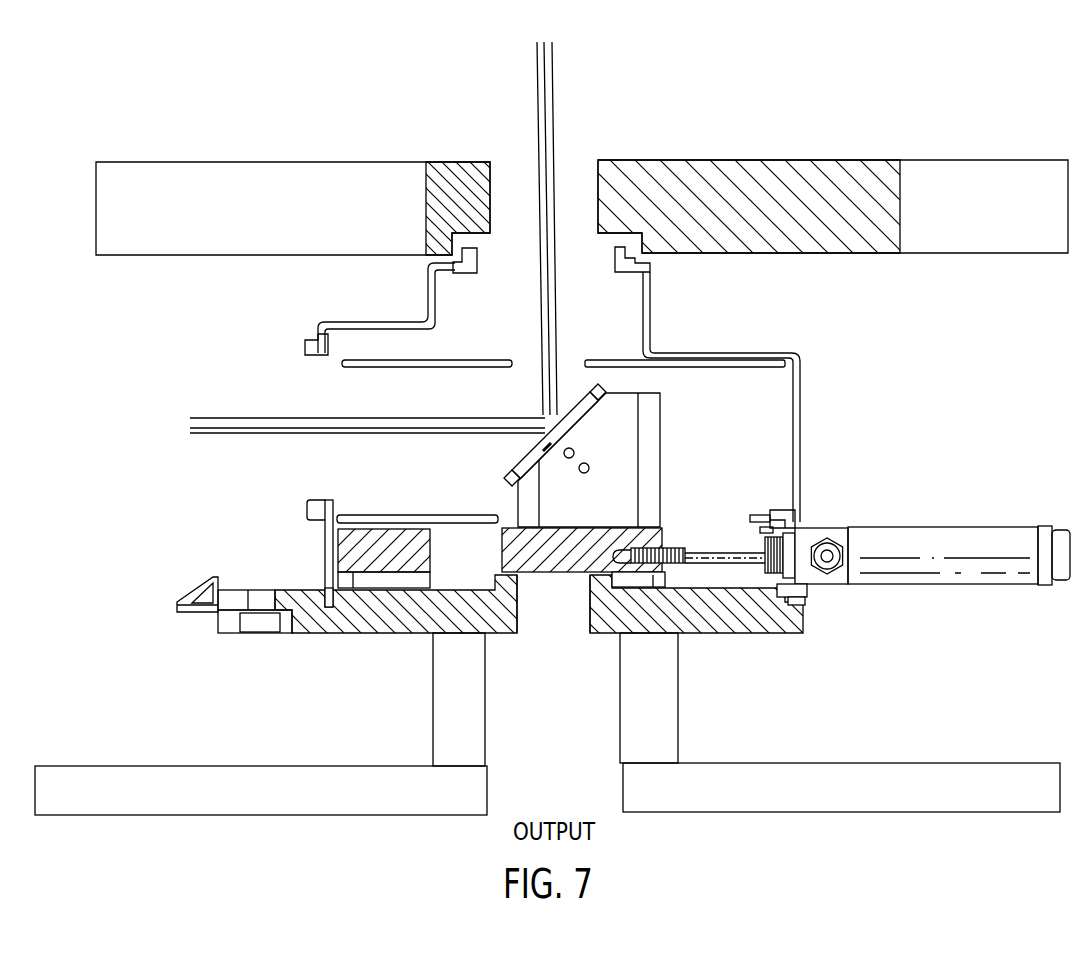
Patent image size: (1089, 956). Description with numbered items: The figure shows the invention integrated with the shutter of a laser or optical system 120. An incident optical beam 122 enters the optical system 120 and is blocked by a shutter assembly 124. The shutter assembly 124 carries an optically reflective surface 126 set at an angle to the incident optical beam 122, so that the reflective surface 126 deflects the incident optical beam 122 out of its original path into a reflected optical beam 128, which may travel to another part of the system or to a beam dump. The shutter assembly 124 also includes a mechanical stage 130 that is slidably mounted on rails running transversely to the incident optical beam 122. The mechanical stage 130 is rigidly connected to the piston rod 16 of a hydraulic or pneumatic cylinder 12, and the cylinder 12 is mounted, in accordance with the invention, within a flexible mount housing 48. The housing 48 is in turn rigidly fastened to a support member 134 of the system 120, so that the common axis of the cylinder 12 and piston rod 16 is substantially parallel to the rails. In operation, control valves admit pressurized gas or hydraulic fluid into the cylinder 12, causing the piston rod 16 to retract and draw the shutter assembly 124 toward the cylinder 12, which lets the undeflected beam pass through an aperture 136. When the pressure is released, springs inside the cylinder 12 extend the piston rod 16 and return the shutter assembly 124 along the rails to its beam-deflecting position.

The hydraulic or pneumatic cylinder 12 is at (937, 537).
The piston rod 16 is at (710, 552).
The flexible mount housing 48 is at (805, 517).
The laser or optical system 120 is at (790, 121).
The incident optical beam 122 is at (553, 134).
The shutter assembly 124 is at (690, 392).
The optically reflective surface 126 is at (568, 398).
The reflected optical beam 128 is at (238, 417).
The mechanical stage 130 is at (660, 529).
The support member 134 is at (800, 613).
The aperture 136 is at (588, 607).